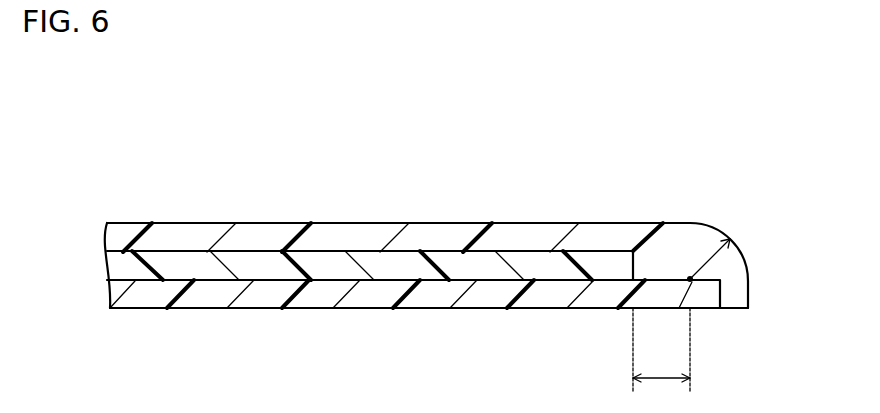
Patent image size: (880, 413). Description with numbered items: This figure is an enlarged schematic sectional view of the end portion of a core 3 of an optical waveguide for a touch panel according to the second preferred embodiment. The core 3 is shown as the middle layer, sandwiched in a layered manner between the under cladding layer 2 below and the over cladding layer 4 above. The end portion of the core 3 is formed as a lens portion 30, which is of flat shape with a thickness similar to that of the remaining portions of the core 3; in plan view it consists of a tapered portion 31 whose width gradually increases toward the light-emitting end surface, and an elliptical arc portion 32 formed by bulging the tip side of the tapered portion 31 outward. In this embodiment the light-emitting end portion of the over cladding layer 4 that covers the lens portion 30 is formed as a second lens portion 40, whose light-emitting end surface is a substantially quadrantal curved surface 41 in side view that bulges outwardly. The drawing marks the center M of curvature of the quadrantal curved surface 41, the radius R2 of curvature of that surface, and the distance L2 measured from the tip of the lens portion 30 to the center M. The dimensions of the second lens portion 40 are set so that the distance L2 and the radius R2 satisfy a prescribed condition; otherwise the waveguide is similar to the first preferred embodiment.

The under cladding layer 2 is at (710, 293).
The core 3 is at (391, 196).
The over cladding layer 4 is at (457, 240).
The lens portion 30 is at (547, 196).
The tapered portion 31 is at (460, 262).
The elliptical arc portion 32 is at (651, 225).
The second lens portion 40 is at (750, 253).
The quadrantal curved surface 41 is at (748, 256).
The center of curvature M is at (692, 275).
The radius of curvature R2 is at (719, 228).
The distance L2 is at (661, 350).